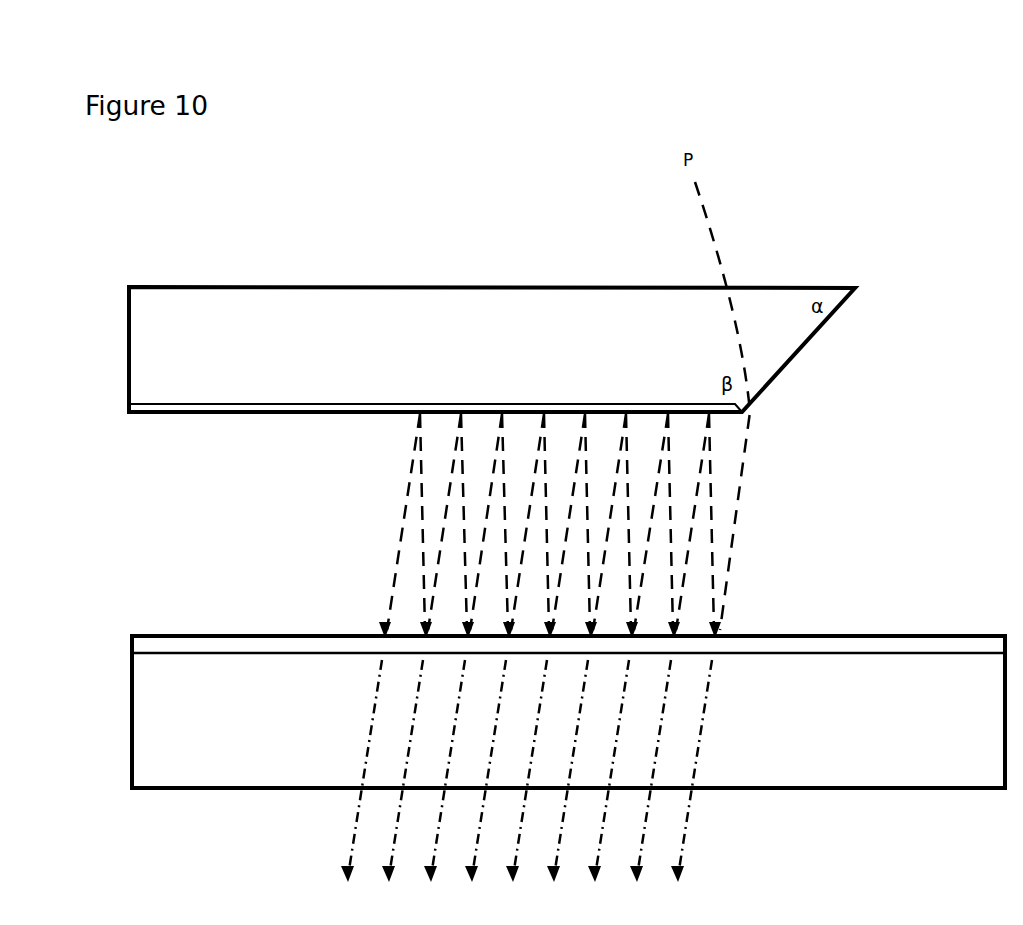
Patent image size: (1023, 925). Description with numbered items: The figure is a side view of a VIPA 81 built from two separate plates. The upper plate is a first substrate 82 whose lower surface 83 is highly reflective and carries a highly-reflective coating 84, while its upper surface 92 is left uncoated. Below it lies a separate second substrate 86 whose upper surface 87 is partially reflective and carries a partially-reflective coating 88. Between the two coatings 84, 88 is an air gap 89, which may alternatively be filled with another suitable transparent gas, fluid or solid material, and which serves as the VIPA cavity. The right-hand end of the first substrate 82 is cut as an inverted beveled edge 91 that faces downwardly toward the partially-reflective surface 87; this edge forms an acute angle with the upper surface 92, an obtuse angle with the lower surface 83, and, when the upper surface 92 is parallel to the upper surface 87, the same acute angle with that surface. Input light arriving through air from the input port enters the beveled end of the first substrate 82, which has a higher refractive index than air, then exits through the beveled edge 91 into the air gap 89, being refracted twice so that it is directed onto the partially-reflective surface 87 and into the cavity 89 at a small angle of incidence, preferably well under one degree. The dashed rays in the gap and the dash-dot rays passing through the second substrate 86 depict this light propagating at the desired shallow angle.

The VIPA 81 is at (388, 200).
The first substrate 82 is at (492, 349).
The lower surface 83 is at (238, 396).
The highly-reflective coating 84 is at (165, 413).
The second substrate 86 is at (568, 759).
The upper surface 87 is at (255, 672).
The partially-reflective coating 88 is at (148, 645).
The air gap 89 is at (488, 526).
The inverted beveled edge 91 is at (819, 341).
The upper surface 92 is at (472, 283).